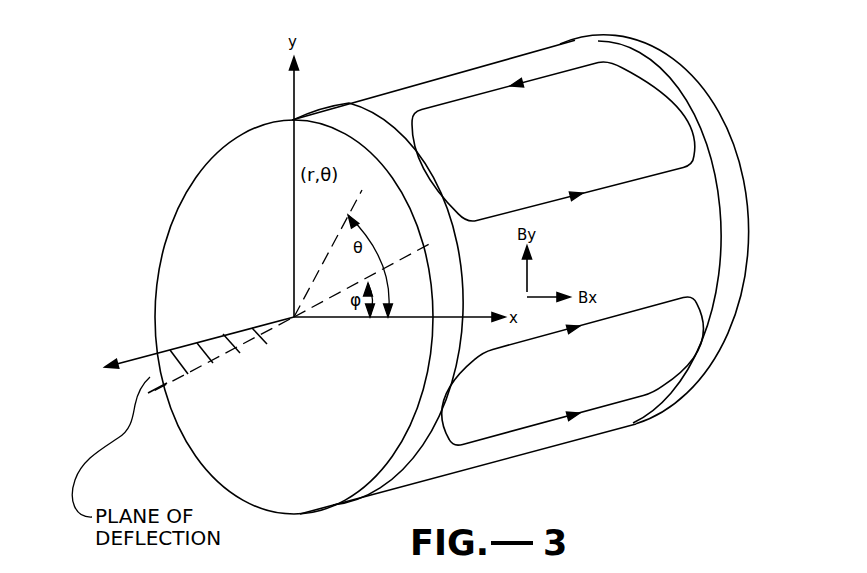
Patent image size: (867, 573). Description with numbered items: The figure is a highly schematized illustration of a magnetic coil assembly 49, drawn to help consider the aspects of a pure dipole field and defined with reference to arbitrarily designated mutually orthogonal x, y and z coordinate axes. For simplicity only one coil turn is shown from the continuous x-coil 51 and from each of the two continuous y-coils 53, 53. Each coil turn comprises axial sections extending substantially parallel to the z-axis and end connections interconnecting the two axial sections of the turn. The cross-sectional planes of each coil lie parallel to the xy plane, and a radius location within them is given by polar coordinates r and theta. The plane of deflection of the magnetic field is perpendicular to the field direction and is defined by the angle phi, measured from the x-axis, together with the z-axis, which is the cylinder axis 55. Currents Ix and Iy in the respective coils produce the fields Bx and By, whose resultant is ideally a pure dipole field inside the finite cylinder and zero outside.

The magnetic coil assembly 49 is at (737, 63).
The continuous x-coil 51 is at (722, 201).
The continuous y-coils 53 is at (657, 71).
The cylinder axis 55 is at (138, 356).